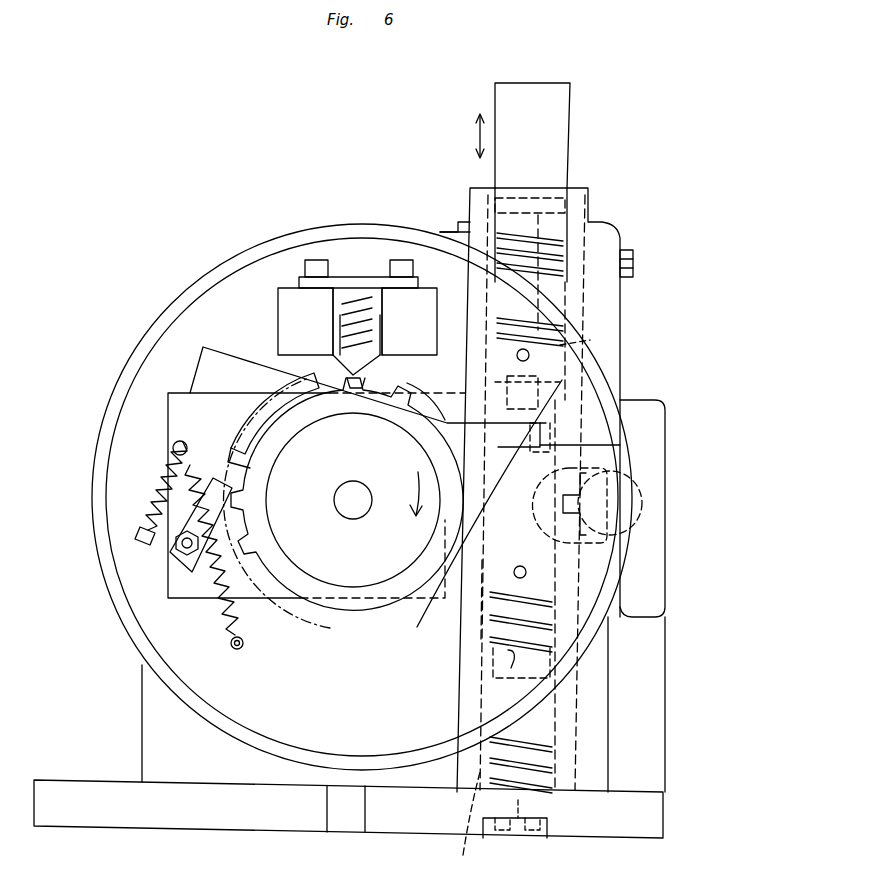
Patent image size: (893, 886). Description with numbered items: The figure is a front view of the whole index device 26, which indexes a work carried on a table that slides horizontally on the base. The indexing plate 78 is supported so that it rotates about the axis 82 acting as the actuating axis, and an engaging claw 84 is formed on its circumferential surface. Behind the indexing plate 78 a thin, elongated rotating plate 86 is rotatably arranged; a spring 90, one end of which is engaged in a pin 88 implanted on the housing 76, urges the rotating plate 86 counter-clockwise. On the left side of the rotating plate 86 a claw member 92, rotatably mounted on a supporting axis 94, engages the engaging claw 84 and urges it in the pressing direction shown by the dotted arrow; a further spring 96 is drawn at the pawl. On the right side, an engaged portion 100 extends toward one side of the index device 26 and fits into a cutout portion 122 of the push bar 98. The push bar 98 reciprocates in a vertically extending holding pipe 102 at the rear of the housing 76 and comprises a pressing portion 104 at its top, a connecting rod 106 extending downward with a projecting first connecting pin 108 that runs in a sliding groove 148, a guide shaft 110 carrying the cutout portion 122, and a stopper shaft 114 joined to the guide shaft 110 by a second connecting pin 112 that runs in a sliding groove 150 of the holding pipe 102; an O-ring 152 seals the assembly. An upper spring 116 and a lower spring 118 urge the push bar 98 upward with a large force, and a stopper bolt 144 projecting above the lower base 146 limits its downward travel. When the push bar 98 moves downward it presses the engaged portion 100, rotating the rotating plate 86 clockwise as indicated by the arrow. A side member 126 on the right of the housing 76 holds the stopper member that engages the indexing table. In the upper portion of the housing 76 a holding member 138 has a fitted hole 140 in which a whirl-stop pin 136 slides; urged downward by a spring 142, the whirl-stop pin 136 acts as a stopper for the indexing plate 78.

The index device 26 is at (226, 250).
The housing 76 is at (122, 606).
The indexing plate 78 is at (321, 632).
The axis 82 is at (353, 512).
The engaging claw 84 is at (340, 472).
The rotating plate 86 is at (258, 604).
The pin 88 is at (240, 650).
The spring 90 is at (226, 618).
The claw member 92 is at (190, 568).
The supporting axis 94 is at (181, 548).
The pawl spring 96 is at (156, 512).
The push bar 98 is at (582, 122).
The engaged portion 100 is at (540, 420).
The holding pipe 102 is at (472, 195).
The pressing portion 104 is at (565, 165).
The connecting rod 106 is at (624, 242).
The first connecting pin 108 is at (590, 341).
The guide shaft 110 is at (482, 573).
The second connecting pin 112 is at (526, 576).
The stopper shaft 114 is at (555, 685).
The upper spring 116 is at (592, 222).
The lower spring 118 is at (460, 823).
The cutout portion 122 is at (495, 382).
The side member 126 is at (665, 605).
The whirl-stop pin 136 is at (333, 362).
The holding member 138 is at (297, 298).
The fitted hole 140 is at (338, 312).
The spring 142 is at (355, 292).
The stopper bolt 144 is at (525, 803).
The lower base 146 is at (390, 822).
The sliding groove 148 is at (540, 345).
The sliding groove 150 is at (505, 662).
The O-ring 152 is at (575, 196).